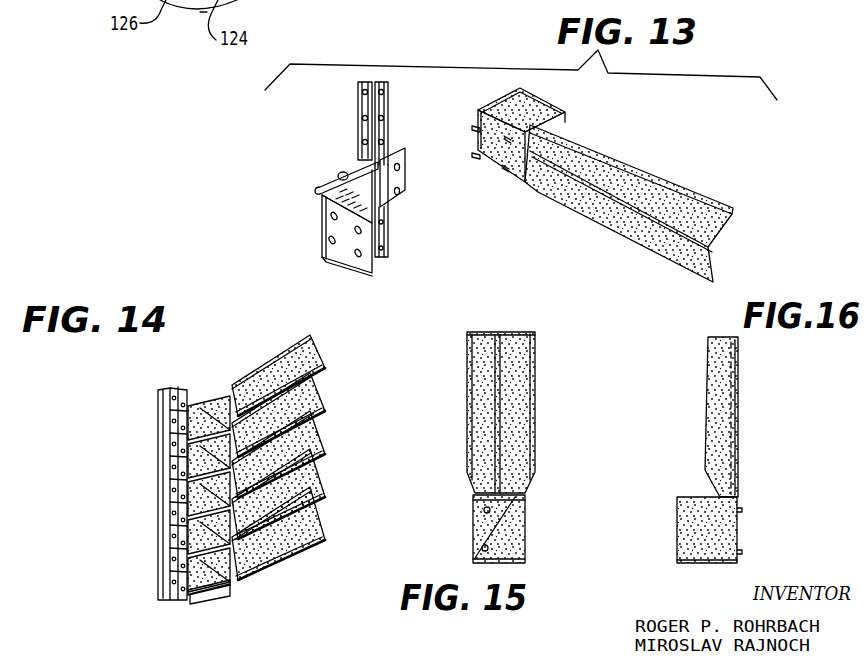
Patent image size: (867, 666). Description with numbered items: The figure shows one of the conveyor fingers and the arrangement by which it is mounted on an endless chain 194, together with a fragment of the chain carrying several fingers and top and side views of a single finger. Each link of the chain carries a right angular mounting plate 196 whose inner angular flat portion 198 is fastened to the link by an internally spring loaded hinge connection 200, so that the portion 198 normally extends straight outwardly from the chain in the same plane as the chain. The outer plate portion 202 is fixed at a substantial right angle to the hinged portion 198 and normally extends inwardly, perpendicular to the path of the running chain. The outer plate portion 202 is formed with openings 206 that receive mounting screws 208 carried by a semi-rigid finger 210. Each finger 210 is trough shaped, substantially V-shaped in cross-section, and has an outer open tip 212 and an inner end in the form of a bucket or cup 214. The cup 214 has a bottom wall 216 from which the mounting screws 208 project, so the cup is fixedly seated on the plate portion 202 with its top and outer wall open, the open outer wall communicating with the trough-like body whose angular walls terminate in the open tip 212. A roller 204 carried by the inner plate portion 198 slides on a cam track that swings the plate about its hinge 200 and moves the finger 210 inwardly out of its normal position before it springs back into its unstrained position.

In FIG. 13, the endless chain 194 is at (367, 103).
In FIG. 13, the right angular mounting plate 196 is at (317, 218).
In FIG. 13, the angular flat plate portion 198 is at (342, 192).
In FIG. 14, the angular flat plate portion 198 is at (200, 600).
In FIG. 13, the internally spring loaded hinge connection 200 is at (387, 185).
In FIG. 14, the internally spring loaded hinge connection 200 is at (162, 550).
In FIG. 13, the outer plate portion 202 is at (357, 268).
In FIG. 14, the outer plate portion 202 is at (223, 596).
In FIG. 13, the roller 204 is at (343, 172).
In FIG. 13, the opening 206 is at (356, 234).
In FIG. 13, the mounting screw 208 is at (505, 170).
In FIG. 13, the semi-rigid finger 210 is at (650, 182).
In FIG. 14, the semi-rigid finger 210 is at (322, 478).
In FIG. 15, the semi-rigid finger 210 is at (525, 398).
In FIG. 16, the semi-rigid finger 210 is at (727, 428).
In FIG. 13, the open tip 212 is at (712, 250).
In FIG. 14, the open tip 212 is at (322, 430).
In FIG. 15, the open tip 212 is at (515, 333).
In FIG. 16, the open tip 212 is at (730, 337).
In FIG. 13, the cup 214 is at (542, 105).
In FIG. 14, the cup 214 is at (187, 398).
In FIG. 15, the cup 214 is at (527, 530).
In FIG. 16, the cup 214 is at (702, 565).
In FIG. 13, the bottom wall 216 is at (492, 107).